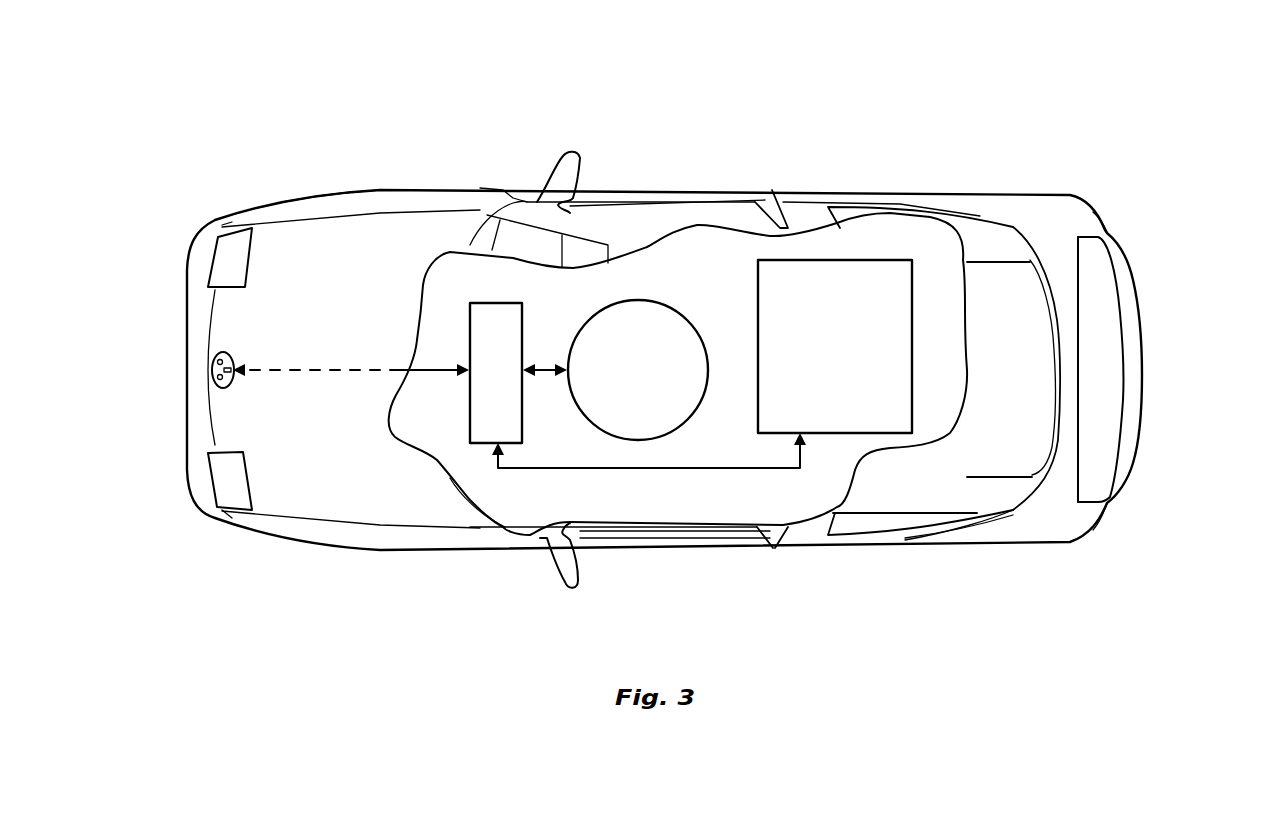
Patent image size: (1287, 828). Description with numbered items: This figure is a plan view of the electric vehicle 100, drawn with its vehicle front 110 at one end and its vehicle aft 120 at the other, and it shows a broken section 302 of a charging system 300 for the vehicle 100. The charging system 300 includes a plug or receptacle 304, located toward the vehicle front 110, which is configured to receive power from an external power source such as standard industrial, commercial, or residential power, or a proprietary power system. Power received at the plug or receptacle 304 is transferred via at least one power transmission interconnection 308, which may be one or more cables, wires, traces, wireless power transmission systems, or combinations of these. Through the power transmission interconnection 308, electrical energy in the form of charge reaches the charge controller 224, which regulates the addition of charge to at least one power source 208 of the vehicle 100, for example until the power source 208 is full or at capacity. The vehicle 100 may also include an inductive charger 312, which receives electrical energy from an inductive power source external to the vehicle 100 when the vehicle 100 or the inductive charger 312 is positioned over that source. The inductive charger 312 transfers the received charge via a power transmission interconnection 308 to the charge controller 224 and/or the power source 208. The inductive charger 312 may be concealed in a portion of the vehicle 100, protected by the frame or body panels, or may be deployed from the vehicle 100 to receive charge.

The vehicle 100 is at (1072, 147).
The vehicle front 110 is at (150, 422).
The vehicle aft 120 is at (1148, 457).
The power source 208 is at (850, 260).
The charge controller 224 is at (482, 303).
The charging system 300 is at (532, 500).
The broken section 302 is at (705, 509).
The plug or receptacle 304 is at (212, 367).
The power transmission interconnection 308 is at (547, 368).
The inductive charger 312 is at (650, 302).